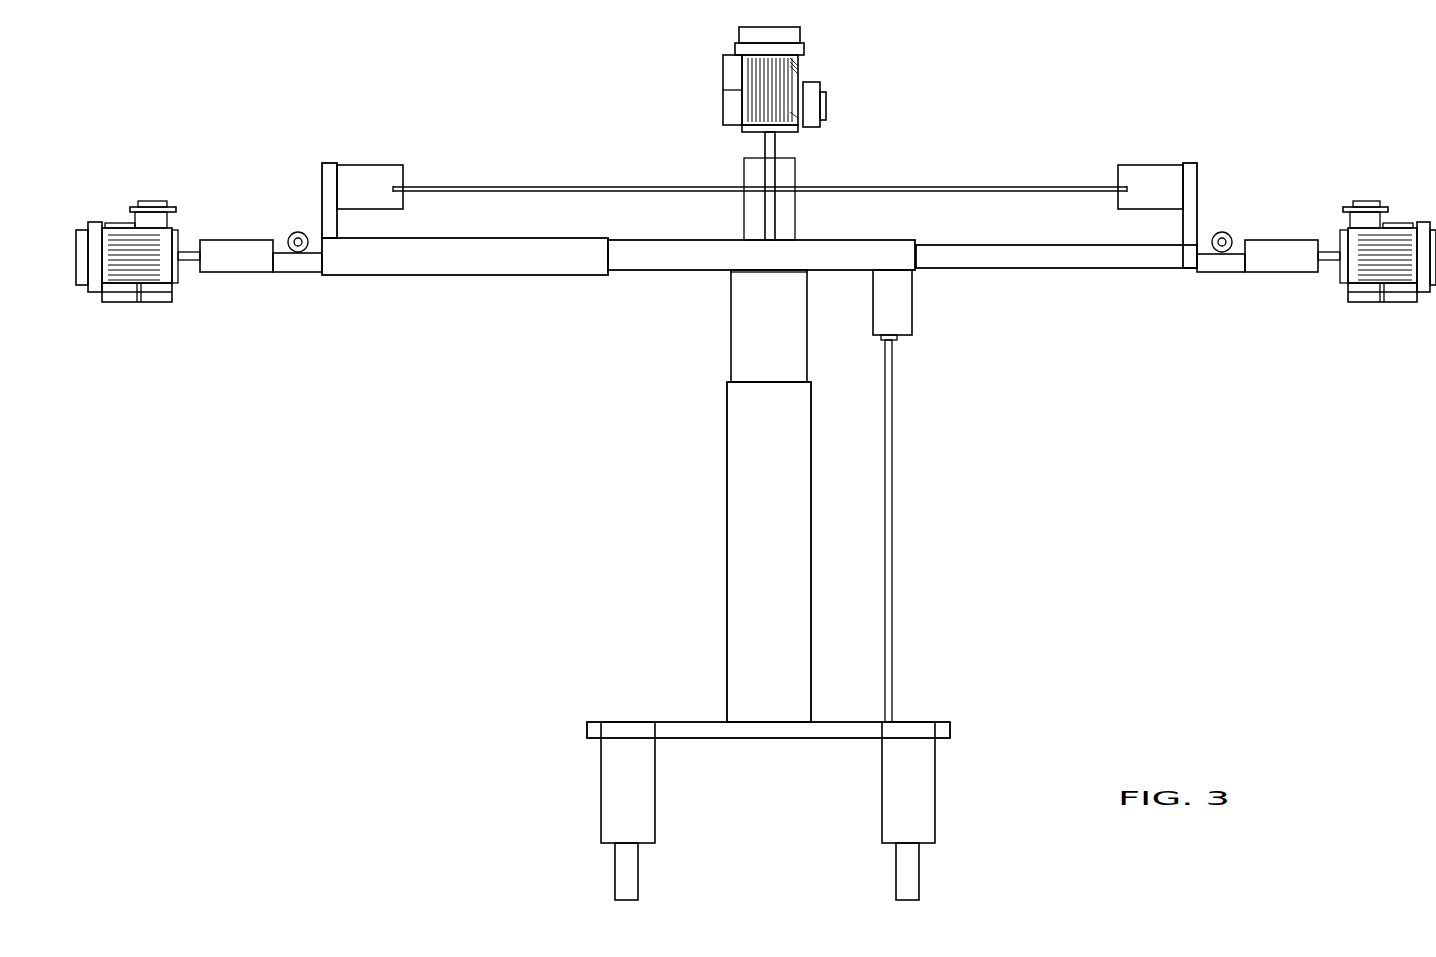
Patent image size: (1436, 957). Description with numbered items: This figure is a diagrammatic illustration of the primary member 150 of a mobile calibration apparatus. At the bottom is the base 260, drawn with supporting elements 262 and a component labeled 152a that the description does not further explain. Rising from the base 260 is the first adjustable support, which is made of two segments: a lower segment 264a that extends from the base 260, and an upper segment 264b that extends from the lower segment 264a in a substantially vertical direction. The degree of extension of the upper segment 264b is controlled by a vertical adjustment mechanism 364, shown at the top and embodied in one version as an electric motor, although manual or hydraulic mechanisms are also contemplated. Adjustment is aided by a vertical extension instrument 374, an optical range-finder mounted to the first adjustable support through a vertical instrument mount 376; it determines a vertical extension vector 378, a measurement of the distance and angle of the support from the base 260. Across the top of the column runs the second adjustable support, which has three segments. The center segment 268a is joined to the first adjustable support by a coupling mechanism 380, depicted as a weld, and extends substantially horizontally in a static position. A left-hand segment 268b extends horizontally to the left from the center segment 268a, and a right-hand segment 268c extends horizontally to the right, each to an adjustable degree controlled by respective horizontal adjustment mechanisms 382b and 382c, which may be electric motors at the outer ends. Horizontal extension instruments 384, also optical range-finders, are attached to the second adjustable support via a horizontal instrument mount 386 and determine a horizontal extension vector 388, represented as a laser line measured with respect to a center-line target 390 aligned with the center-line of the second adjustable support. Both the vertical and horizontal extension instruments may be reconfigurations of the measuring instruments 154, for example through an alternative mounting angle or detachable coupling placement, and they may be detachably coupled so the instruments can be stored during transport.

The primary member 150 is at (268, 695).
The support column assembly 152a is at (690, 690).
The measuring instruments 154 is at (295, 272).
The base 260 is at (770, 738).
The leg 262 is at (601, 781).
The lower segment 264a is at (727, 500).
The upper segment 264b is at (731, 352).
The center segment 268a is at (637, 270).
The left-hand segment 268b is at (420, 275).
The right-hand segment 268c is at (1058, 268).
The vertical adjustment mechanism 364 is at (826, 105).
The vertical extension instrument 374 is at (911, 335).
The vertical instrument mount 376 is at (918, 285).
The vertical extension vector 378 is at (892, 527).
The coupling mechanism 380 is at (712, 287).
The horizontal adjustment mechanism 382b is at (152, 201).
The horizontal adjustment mechanism 382c is at (1366, 201).
The horizontal extension instruments 384 is at (362, 165).
The horizontal instrument mount 386 is at (322, 178).
The horizontal extension vector 388 is at (597, 187).
The center-line target 390 is at (776, 150).